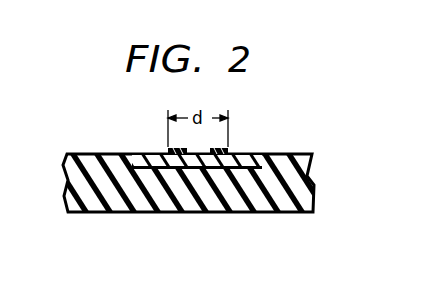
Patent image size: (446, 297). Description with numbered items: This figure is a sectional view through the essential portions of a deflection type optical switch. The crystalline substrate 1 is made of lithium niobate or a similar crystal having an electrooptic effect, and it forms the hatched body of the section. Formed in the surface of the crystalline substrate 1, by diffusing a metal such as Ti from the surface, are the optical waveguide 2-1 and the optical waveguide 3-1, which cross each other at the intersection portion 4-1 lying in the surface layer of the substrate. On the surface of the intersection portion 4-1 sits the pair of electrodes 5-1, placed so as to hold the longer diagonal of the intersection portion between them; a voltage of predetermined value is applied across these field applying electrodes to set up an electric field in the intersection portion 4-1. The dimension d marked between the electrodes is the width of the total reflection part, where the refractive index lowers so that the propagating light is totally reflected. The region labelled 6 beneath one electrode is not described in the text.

The crystalline substrate 1 is at (314, 184).
The optical waveguide 2-1 is at (143, 162).
The optical waveguide 3-1 is at (262, 163).
The intersection portion 4-1 is at (213, 162).
The pair of electrodes 5-1 is at (177, 148).
The conductive region 6 is at (181, 162).